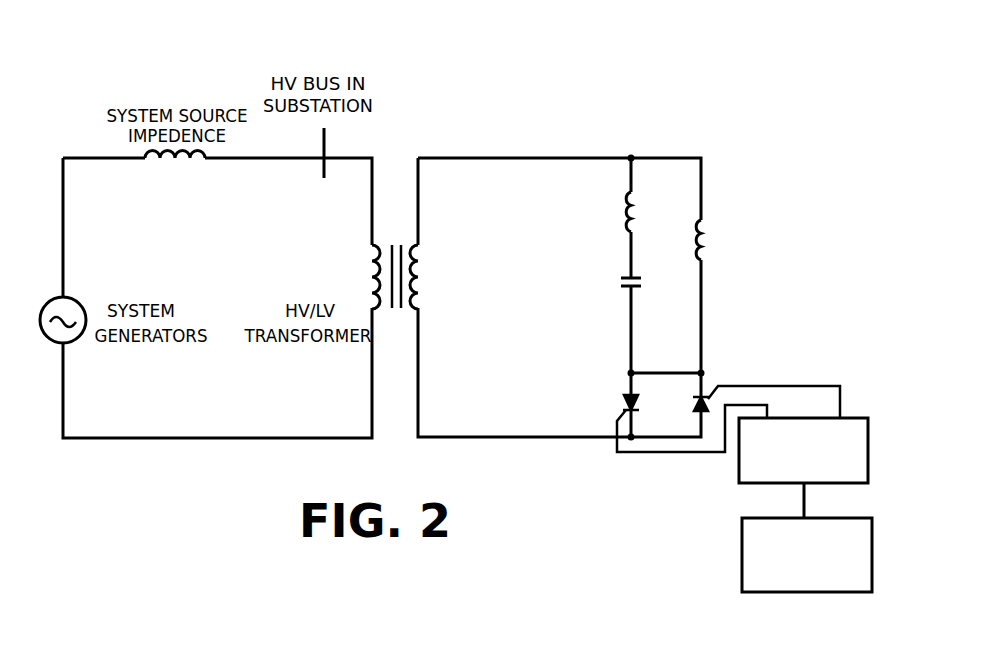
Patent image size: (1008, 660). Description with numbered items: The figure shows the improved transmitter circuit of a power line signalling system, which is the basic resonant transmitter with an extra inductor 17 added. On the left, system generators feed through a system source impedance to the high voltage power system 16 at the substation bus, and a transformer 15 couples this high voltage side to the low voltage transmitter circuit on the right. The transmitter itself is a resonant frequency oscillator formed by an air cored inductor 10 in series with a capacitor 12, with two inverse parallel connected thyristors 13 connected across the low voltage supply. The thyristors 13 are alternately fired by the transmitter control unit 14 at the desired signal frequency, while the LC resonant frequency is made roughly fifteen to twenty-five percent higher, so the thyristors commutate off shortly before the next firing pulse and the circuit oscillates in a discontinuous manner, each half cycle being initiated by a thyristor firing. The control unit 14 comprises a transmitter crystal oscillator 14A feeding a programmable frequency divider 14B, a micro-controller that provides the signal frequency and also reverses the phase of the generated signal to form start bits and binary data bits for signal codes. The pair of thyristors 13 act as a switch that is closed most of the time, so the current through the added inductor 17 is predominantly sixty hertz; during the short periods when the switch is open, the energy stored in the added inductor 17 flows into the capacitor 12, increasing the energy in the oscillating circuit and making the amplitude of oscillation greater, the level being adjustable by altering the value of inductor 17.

The air cored inductor 10 is at (627, 192).
The capacitor 12 is at (630, 277).
The thyristors 13 is at (708, 399).
The transmitter control unit 14 is at (768, 461).
The transmitter crystal oscillator 14A is at (742, 580).
The programmable frequency divider 14B is at (739, 478).
The transformer 15 is at (416, 268).
The high voltage power system 16 is at (330, 159).
The inductor 17 is at (697, 222).